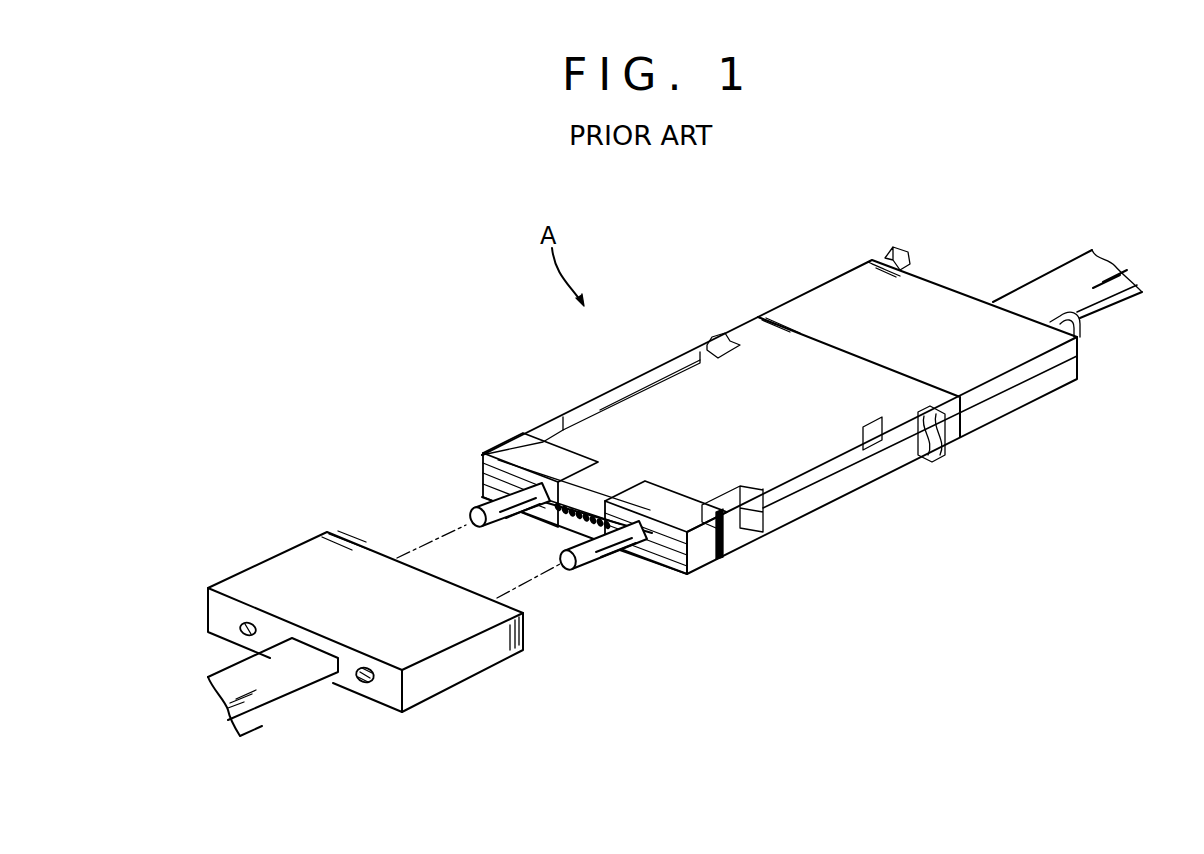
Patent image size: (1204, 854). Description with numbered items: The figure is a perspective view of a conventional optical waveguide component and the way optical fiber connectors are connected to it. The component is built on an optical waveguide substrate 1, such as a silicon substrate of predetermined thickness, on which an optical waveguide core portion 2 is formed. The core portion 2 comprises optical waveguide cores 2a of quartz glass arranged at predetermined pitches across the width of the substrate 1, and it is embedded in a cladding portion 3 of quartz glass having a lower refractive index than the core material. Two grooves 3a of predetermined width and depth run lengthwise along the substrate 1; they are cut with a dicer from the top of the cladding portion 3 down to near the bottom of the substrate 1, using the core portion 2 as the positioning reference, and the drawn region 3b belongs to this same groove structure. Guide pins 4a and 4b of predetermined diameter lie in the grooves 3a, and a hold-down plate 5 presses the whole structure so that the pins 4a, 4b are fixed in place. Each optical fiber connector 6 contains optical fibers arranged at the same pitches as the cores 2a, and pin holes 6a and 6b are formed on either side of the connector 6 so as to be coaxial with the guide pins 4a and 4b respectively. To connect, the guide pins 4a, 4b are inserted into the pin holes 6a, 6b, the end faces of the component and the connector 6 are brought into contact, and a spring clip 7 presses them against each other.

The optical waveguide substrate 1 is at (823, 493).
The optical waveguide core portion 2 is at (571, 425).
The optical waveguide cores 2a is at (580, 508).
The cladding portion 3 is at (582, 506).
The grooves 3a is at (500, 462).
The connector block lower portion 3b is at (635, 535).
The guide pin 4a is at (482, 510).
The guide pin 4b is at (596, 550).
The hold-down plate 5 is at (673, 377).
The optical fiber connector 6 is at (925, 295).
The pin hole 6a is at (237, 633).
The pin hole 6b is at (362, 687).
The spring clip 7 is at (893, 252).